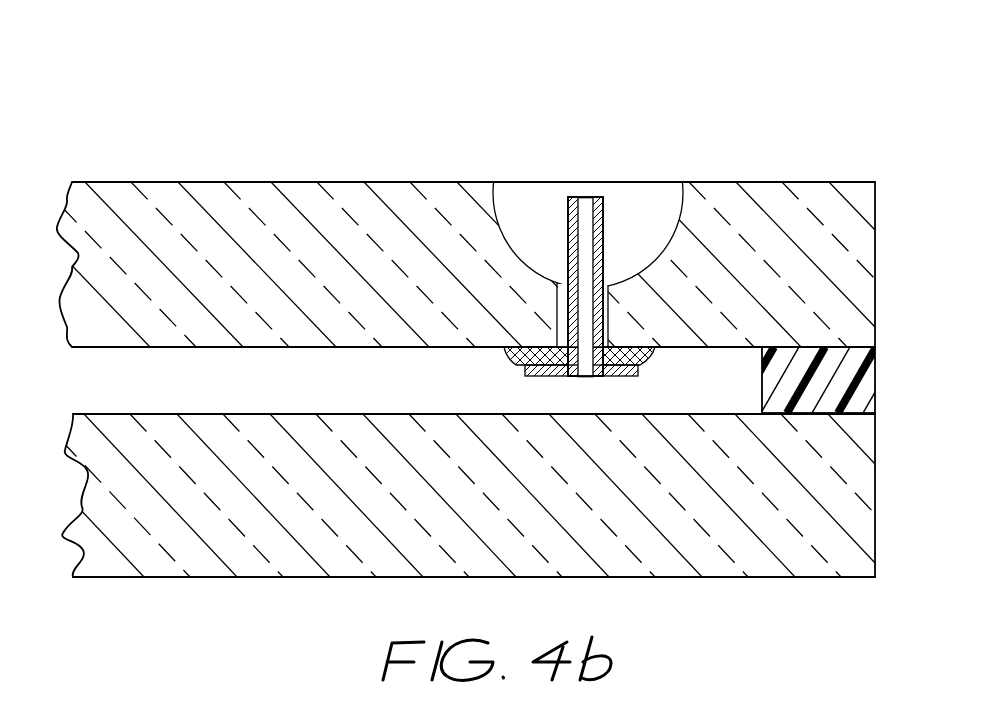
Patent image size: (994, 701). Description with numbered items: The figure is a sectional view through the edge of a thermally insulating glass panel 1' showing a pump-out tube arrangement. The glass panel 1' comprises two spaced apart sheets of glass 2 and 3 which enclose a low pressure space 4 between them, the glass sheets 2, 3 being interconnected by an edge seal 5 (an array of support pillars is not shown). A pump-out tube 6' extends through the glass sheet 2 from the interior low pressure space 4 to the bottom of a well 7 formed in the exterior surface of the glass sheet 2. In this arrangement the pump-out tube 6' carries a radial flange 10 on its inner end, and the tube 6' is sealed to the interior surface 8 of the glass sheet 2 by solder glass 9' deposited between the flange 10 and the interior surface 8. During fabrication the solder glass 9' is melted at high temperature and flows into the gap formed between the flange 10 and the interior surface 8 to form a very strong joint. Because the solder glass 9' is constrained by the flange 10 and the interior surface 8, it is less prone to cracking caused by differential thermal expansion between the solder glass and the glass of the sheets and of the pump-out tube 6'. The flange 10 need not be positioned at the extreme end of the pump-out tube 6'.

The glass panel 1' is at (466, 116).
The glass sheet 2 is at (225, 208).
The glass sheet 3 is at (227, 528).
The low pressure space 4 is at (145, 377).
The edge seal 5 is at (768, 362).
The pump-out tube 6' is at (618, 222).
The well 7 is at (527, 207).
The interior surface 8 is at (706, 347).
The solder glass 9' is at (538, 370).
The radial flange 10 is at (625, 377).